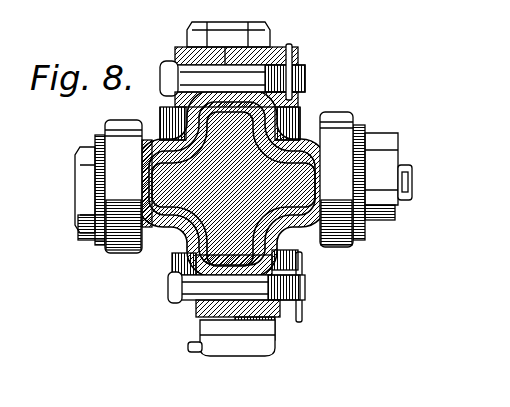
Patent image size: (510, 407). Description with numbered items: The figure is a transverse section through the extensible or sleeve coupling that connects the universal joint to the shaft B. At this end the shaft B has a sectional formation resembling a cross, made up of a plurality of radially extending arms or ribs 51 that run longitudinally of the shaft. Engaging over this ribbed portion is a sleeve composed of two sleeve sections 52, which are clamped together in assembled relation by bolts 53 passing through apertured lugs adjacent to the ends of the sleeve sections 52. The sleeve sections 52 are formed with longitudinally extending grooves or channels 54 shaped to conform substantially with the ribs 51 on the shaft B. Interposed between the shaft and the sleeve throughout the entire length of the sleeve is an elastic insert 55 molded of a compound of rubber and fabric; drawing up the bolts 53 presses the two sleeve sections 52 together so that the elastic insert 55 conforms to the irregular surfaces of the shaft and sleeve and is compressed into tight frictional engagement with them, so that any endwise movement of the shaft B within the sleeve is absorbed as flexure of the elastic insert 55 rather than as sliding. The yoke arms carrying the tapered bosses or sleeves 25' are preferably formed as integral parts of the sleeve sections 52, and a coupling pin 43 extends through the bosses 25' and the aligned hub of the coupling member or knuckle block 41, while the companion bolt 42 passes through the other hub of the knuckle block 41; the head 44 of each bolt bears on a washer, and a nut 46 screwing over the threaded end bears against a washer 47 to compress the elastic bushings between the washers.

The shaft B is at (195, 236).
The tapered bosses or sleeves 25' is at (226, 174).
The coupling member or knuckle block 41 is at (298, 112).
The bolt 42 is at (230, 355).
The coupling pin 43 is at (406, 188).
The head 44 is at (262, 22).
The nut 46 is at (213, 334).
The washer 47 is at (282, 318).
The radially extending arms or ribs 51 is at (165, 126).
The sleeve sections 52 is at (196, 43).
The bolts 53 is at (276, 73).
The grooves or channels 54 is at (92, 180).
The elastic insert 55 is at (213, 231).